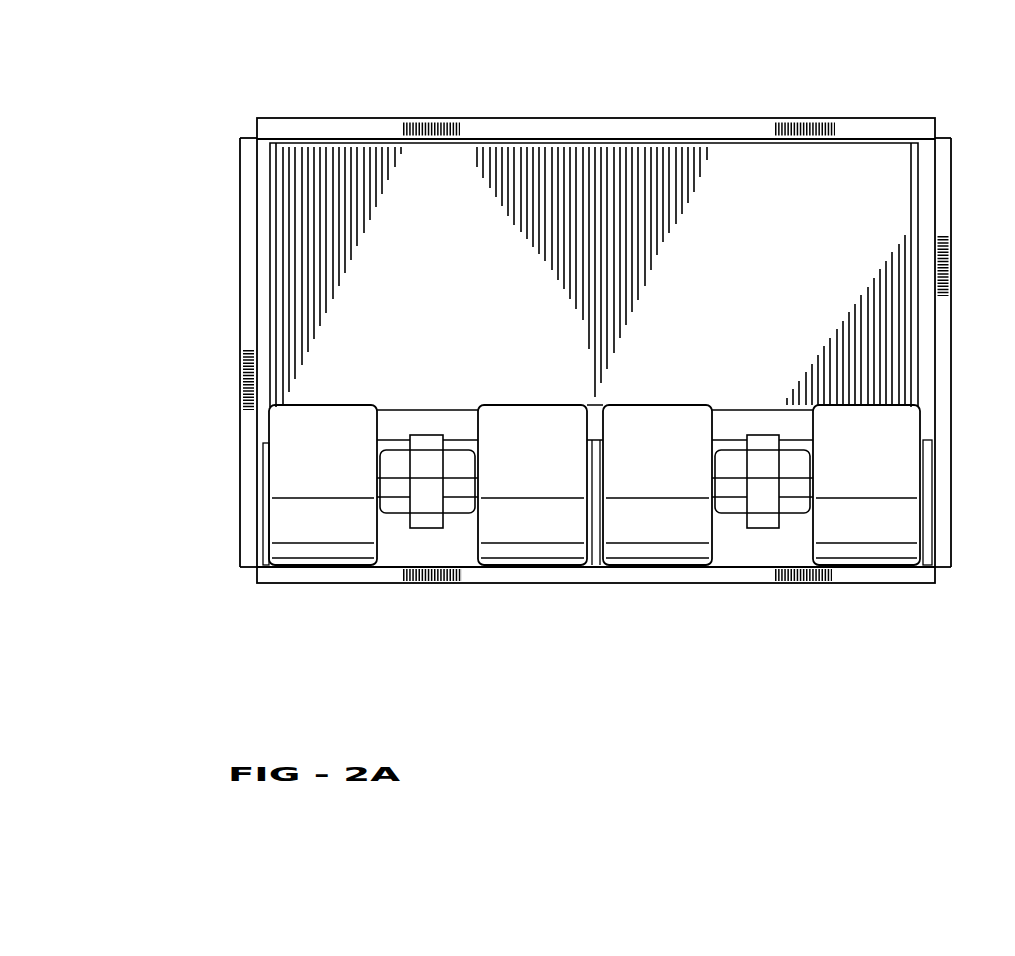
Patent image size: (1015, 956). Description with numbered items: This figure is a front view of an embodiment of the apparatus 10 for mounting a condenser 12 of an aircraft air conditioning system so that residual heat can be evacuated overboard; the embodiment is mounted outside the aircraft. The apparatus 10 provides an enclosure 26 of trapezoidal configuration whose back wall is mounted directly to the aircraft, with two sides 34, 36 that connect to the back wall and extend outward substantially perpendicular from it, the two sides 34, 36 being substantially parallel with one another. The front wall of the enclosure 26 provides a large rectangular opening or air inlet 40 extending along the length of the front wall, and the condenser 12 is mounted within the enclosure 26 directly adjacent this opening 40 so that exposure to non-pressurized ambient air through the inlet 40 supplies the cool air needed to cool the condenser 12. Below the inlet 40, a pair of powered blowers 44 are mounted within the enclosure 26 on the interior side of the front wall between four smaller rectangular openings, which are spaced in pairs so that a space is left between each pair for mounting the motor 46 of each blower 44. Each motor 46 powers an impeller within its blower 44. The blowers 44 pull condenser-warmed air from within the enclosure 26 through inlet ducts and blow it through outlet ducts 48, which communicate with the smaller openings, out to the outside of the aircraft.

The apparatus 10 is at (640, 85).
The condenser 12 is at (433, 167).
The enclosure 26 is at (495, 590).
The side 34 is at (246, 491).
The side 36 is at (947, 187).
The air inlet 40 is at (730, 150).
The blower 44 is at (395, 555).
The motor 46 is at (424, 530).
The outlet duct 48 is at (273, 517).